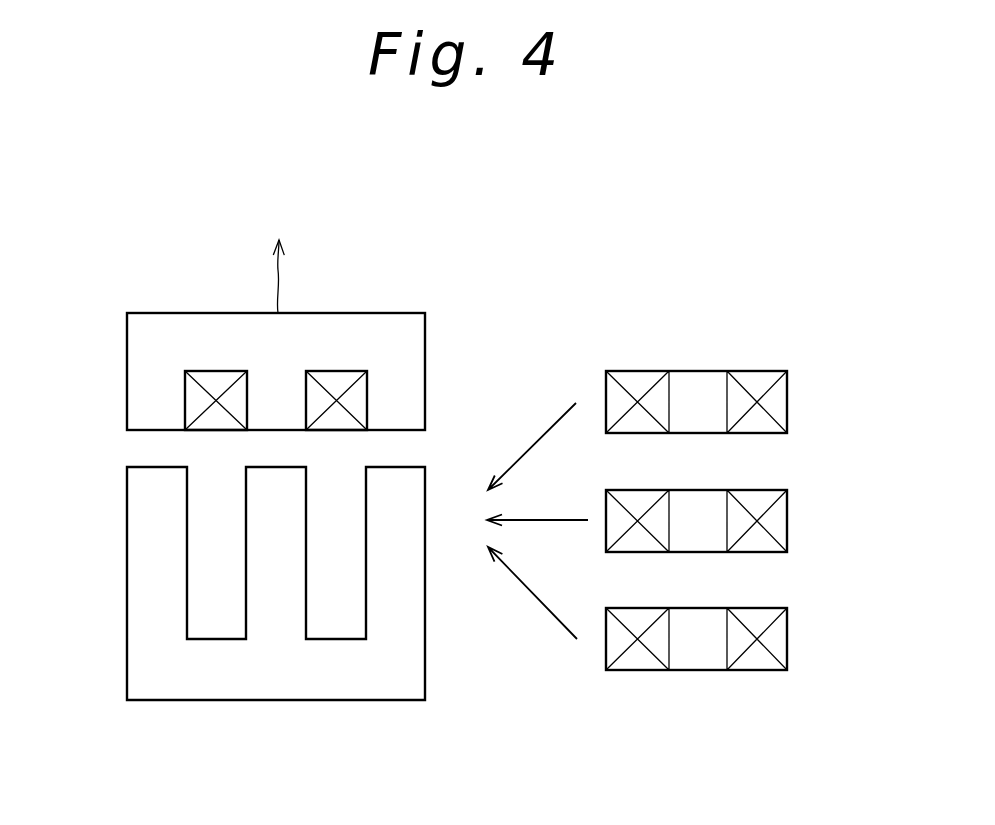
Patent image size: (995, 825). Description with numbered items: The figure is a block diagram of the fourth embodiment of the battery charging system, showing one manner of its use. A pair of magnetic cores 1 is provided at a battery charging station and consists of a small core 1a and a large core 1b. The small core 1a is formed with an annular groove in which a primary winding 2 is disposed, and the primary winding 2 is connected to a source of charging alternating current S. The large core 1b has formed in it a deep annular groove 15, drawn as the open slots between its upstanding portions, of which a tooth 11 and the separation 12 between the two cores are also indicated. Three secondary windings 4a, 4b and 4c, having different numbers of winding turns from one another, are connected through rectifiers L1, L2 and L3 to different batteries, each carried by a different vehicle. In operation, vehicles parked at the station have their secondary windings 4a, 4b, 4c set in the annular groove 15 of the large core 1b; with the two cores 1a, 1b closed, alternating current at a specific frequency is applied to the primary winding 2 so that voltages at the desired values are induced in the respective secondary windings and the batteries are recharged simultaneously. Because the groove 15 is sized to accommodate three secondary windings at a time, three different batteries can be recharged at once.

The pair of magnetic cores 1 is at (374, 717).
The small core 1a is at (142, 382).
The large core 1b is at (135, 617).
The primary winding 2 is at (210, 381).
The tooth 11 is at (398, 467).
The gap between core portions 12 is at (145, 433).
The annular groove 15 is at (222, 627).
The secondary winding 4a is at (697, 382).
The secondary winding 4b is at (690, 503).
The secondary winding 4c is at (690, 620).
The rectifier L1 is at (789, 405).
The rectifier L2 is at (789, 523).
The rectifier L3 is at (789, 641).
The source of charging alternating current S is at (276, 260).